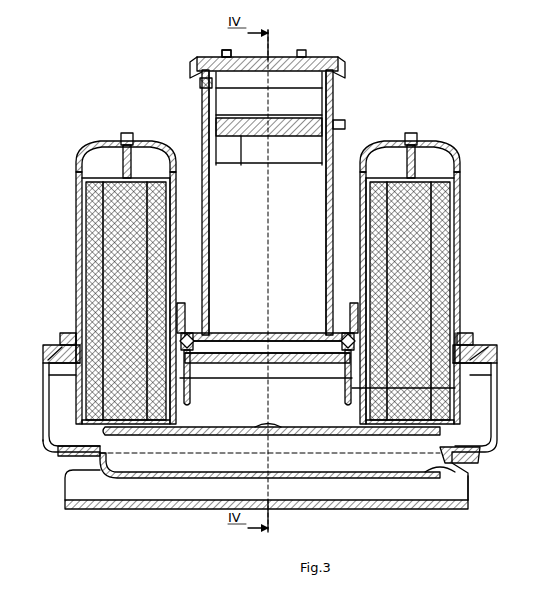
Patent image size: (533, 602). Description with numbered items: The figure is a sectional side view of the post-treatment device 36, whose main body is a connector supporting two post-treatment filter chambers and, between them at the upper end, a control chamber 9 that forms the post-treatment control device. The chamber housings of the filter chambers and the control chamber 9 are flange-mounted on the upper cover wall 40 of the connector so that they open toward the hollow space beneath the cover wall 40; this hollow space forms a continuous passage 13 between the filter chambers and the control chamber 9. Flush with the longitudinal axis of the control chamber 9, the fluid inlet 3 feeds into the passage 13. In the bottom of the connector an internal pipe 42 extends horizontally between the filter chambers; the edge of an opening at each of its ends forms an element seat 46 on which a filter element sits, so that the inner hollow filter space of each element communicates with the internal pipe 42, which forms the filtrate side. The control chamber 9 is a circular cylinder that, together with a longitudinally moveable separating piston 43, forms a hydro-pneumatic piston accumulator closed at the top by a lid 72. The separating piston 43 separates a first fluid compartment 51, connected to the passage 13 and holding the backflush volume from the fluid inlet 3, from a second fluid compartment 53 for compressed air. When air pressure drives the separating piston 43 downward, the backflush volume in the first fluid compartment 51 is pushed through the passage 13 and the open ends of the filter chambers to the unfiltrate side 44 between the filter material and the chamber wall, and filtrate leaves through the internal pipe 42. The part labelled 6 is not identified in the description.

The fluid inlet 3 is at (272, 427).
The filter device 6 is at (286, 258).
The control chamber 9 is at (330, 216).
The continuous passage 13 is at (272, 412).
The post-treatment device 36 is at (418, 98).
The upper cover wall 40 is at (478, 352).
The internal pipe 42 is at (350, 472).
The separating piston 43 is at (242, 136).
The unfiltrate side 44 is at (78, 328).
The element seat 46 is at (62, 428).
The first fluid compartment 51 is at (300, 183).
The second fluid compartment 53 is at (292, 98).
The lid 72 is at (225, 57).